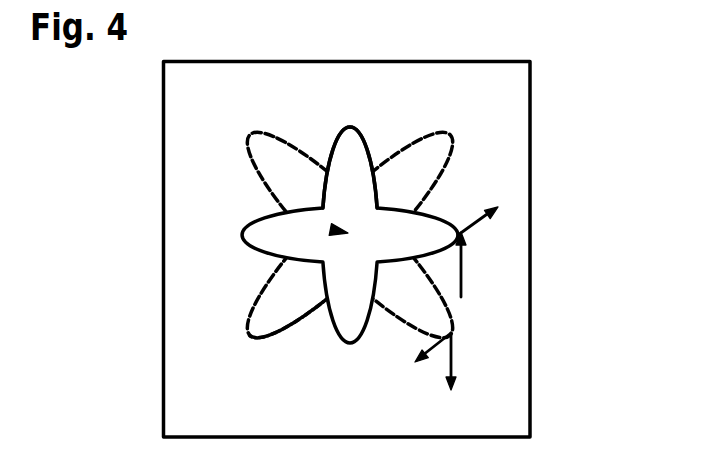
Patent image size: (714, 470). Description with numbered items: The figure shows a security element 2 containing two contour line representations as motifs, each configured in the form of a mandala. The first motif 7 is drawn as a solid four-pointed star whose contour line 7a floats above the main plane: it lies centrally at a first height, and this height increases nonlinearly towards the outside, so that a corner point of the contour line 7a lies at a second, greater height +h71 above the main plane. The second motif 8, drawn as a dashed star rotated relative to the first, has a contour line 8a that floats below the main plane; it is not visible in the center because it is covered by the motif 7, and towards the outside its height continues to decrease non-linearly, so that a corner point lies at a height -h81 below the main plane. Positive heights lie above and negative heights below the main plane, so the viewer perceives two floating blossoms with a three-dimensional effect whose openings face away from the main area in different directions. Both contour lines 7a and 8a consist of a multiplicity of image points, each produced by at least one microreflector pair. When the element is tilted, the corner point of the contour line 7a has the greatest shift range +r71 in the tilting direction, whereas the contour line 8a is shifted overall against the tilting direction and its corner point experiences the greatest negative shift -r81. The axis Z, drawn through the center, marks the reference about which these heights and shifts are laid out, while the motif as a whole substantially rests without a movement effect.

The security element 2 is at (475, 126).
The motif 7 is at (410, 236).
The contour line 7a is at (367, 140).
The motif 8 is at (290, 293).
The contour line 8a is at (445, 307).
The axis of rotation Z is at (335, 231).
The shift range r71 is at (492, 226).
The height h71 is at (486, 264).
The negative shift r81 is at (411, 359).
The height h81 is at (477, 361).